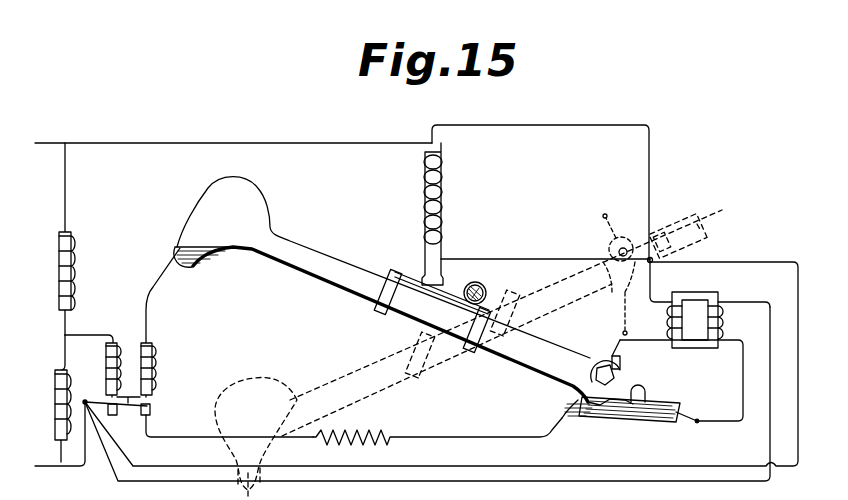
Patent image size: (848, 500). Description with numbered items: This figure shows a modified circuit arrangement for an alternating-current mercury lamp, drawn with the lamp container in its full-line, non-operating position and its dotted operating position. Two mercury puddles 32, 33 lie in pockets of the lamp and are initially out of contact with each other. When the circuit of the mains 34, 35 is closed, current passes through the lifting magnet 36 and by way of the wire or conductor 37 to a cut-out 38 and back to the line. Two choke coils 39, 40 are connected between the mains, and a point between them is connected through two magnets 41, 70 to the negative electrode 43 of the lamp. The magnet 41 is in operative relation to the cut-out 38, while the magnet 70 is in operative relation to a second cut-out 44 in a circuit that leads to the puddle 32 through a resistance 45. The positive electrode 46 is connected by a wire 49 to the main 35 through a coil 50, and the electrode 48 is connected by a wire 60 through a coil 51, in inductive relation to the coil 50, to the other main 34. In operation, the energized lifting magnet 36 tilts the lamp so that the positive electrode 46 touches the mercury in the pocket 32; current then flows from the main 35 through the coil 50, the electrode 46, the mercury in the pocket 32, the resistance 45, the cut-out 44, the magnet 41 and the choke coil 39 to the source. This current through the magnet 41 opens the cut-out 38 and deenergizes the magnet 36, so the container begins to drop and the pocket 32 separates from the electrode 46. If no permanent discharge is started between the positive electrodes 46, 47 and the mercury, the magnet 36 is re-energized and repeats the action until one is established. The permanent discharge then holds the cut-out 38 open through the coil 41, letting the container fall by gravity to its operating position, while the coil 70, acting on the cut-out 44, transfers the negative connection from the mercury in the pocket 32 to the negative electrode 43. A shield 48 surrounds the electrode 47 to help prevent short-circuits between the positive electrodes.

The mercury puddle 32 is at (597, 422).
The mercury puddle 33 is at (639, 421).
The main 34 is at (60, 143).
The main 35 is at (61, 446).
The lifting magnet 36 is at (444, 198).
The wire or conductor 37 is at (763, 262).
The cut-out 38 is at (116, 415).
The choke coil 39 is at (80, 239).
The choke coil 40 is at (73, 398).
The magnet 41 is at (102, 369).
The negative electrode 43 is at (196, 268).
The cut-out 44 is at (227, 420).
The resistance 45 is at (437, 429).
The positive electrode 46 is at (646, 393).
The positive electrode 47 is at (594, 358).
The shield 48 is at (622, 376).
The wire 49 is at (743, 383).
The coil 50 is at (723, 323).
The coil 51 is at (671, 323).
The wire 60 is at (624, 126).
The magnet 70 is at (160, 322).